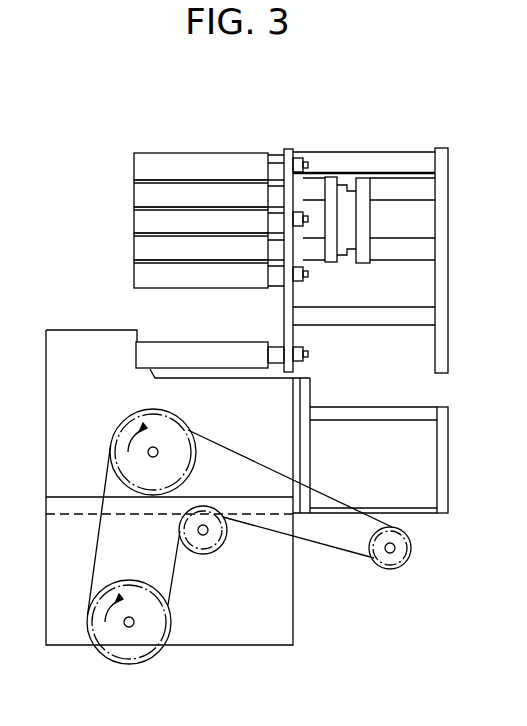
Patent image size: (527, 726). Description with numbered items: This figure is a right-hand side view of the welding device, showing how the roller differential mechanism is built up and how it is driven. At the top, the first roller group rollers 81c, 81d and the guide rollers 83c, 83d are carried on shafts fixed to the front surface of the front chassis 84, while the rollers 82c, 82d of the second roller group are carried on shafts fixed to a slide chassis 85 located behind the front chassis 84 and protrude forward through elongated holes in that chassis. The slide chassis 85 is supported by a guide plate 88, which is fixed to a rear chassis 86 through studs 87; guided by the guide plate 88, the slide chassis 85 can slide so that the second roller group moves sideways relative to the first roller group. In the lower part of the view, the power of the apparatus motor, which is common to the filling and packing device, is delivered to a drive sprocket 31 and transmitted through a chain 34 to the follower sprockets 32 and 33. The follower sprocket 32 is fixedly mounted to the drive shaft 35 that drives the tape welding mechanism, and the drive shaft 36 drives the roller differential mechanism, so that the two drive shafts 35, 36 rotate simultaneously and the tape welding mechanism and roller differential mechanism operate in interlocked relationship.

The drive sprocket 31 is at (401, 556).
The follower sprocket 32 is at (110, 448).
The follower sprocket 33 is at (115, 657).
The chain 34 is at (293, 556).
The drive shaft 35 is at (153, 450).
The drive shaft 36 is at (134, 627).
The roller 81c is at (138, 275).
The roller 81d is at (178, 352).
The roller 82c is at (136, 193).
The roller 82d is at (140, 247).
The guide roller 83c is at (134, 163).
The guide roller 83d is at (137, 219).
The front chassis 84 is at (284, 305).
The slide chassis 85 is at (331, 186).
The rear chassis 86 is at (448, 249).
The stud 87 is at (405, 257).
The guide plate 88 is at (360, 264).